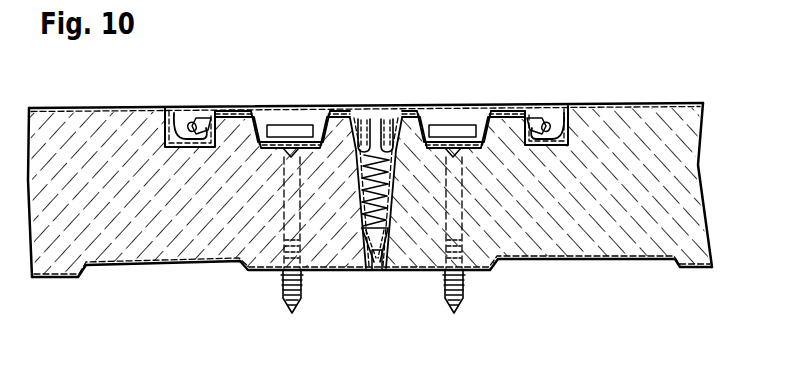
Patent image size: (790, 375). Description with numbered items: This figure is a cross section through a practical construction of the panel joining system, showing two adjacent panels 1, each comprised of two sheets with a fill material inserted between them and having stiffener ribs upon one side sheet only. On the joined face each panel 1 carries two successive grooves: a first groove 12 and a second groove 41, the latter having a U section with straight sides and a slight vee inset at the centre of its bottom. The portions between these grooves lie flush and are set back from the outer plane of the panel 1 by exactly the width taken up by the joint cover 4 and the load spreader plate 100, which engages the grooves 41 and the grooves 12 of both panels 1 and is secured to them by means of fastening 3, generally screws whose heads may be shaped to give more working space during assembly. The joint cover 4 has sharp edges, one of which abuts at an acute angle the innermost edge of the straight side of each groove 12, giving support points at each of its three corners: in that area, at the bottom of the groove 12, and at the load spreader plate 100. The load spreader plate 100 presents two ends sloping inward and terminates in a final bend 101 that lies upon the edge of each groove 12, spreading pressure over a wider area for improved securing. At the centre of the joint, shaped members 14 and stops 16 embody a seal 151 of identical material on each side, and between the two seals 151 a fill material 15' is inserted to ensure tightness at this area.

The panel 1 is at (105, 130).
The first groove 12 is at (185, 122).
The final bend 101 is at (209, 124).
The joint cover 4 is at (300, 109).
The second groove 41 is at (267, 120).
The shaped member 14 is at (353, 123).
The load spreader plate 100 is at (382, 116).
The fill material 15' is at (396, 138).
The seal 151 is at (406, 216).
The stop 16 is at (369, 271).
The means of fastening 3 is at (282, 294).